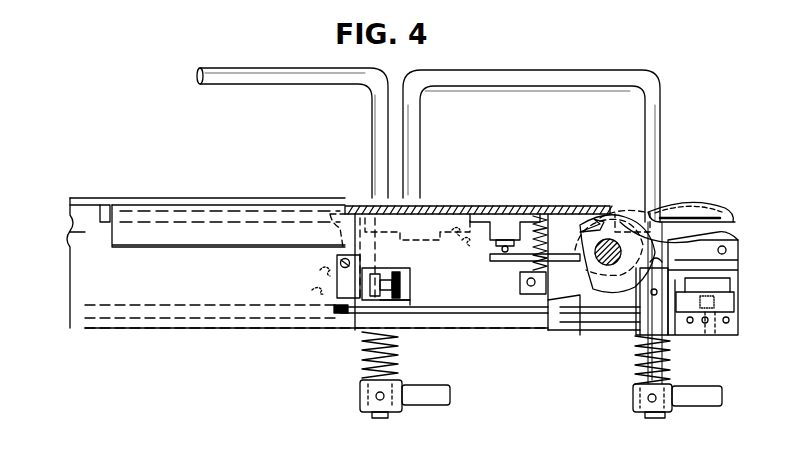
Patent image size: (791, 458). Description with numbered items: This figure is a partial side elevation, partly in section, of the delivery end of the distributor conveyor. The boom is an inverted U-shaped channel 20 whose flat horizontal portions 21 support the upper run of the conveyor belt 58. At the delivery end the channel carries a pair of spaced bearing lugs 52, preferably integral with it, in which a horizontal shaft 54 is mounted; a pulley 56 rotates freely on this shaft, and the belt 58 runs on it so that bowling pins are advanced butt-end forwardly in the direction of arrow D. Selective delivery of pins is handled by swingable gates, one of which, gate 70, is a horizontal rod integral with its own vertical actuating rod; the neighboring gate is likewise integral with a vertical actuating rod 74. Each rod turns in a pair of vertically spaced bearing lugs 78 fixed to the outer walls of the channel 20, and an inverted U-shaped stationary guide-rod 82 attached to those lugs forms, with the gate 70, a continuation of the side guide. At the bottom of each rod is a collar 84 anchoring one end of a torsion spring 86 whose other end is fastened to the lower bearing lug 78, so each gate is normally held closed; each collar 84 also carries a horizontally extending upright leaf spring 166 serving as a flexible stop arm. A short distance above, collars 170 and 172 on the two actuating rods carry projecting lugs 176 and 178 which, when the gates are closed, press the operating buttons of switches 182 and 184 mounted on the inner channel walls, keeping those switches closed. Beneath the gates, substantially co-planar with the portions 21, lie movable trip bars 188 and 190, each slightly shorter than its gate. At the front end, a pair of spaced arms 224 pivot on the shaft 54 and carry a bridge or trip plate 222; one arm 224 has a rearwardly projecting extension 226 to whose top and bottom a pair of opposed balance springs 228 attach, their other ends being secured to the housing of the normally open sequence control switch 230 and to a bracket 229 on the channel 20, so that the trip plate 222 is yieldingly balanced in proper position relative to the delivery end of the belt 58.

The inverted U-shaped channel 20 is at (85, 288).
The flat horizontal portions 21 is at (417, 229).
The bearing lugs 52 is at (730, 215).
The horizontal shaft 54 is at (598, 250).
The pulley 56 is at (600, 310).
The conveyor belt 58 is at (255, 200).
The swingable gate 70 is at (286, 82).
The vertical actuating rod 74 is at (662, 258).
The bearing lugs 78 is at (352, 204).
The inverted U-shaped stationary guide-rod 82 is at (660, 94).
The collar 84 is at (360, 394).
The torsion spring 86 is at (362, 352).
The leaf spring 166 is at (435, 405).
The collar 170 is at (640, 290).
The collar 172 is at (400, 282).
The projecting lug 176 is at (736, 301).
The projecting lug 178 is at (388, 270).
The switch 182 is at (722, 282).
The switch 184 is at (337, 278).
The trip bar 188 is at (188, 247).
The trip bar 190 is at (70, 232).
The trip plate 222 is at (702, 218).
The arms 224 is at (628, 205).
The rearwardly projecting extension 226 is at (508, 262).
The balance springs 228 is at (540, 205).
The bracket 229 is at (525, 294).
The sequence control switch 230 is at (495, 216).